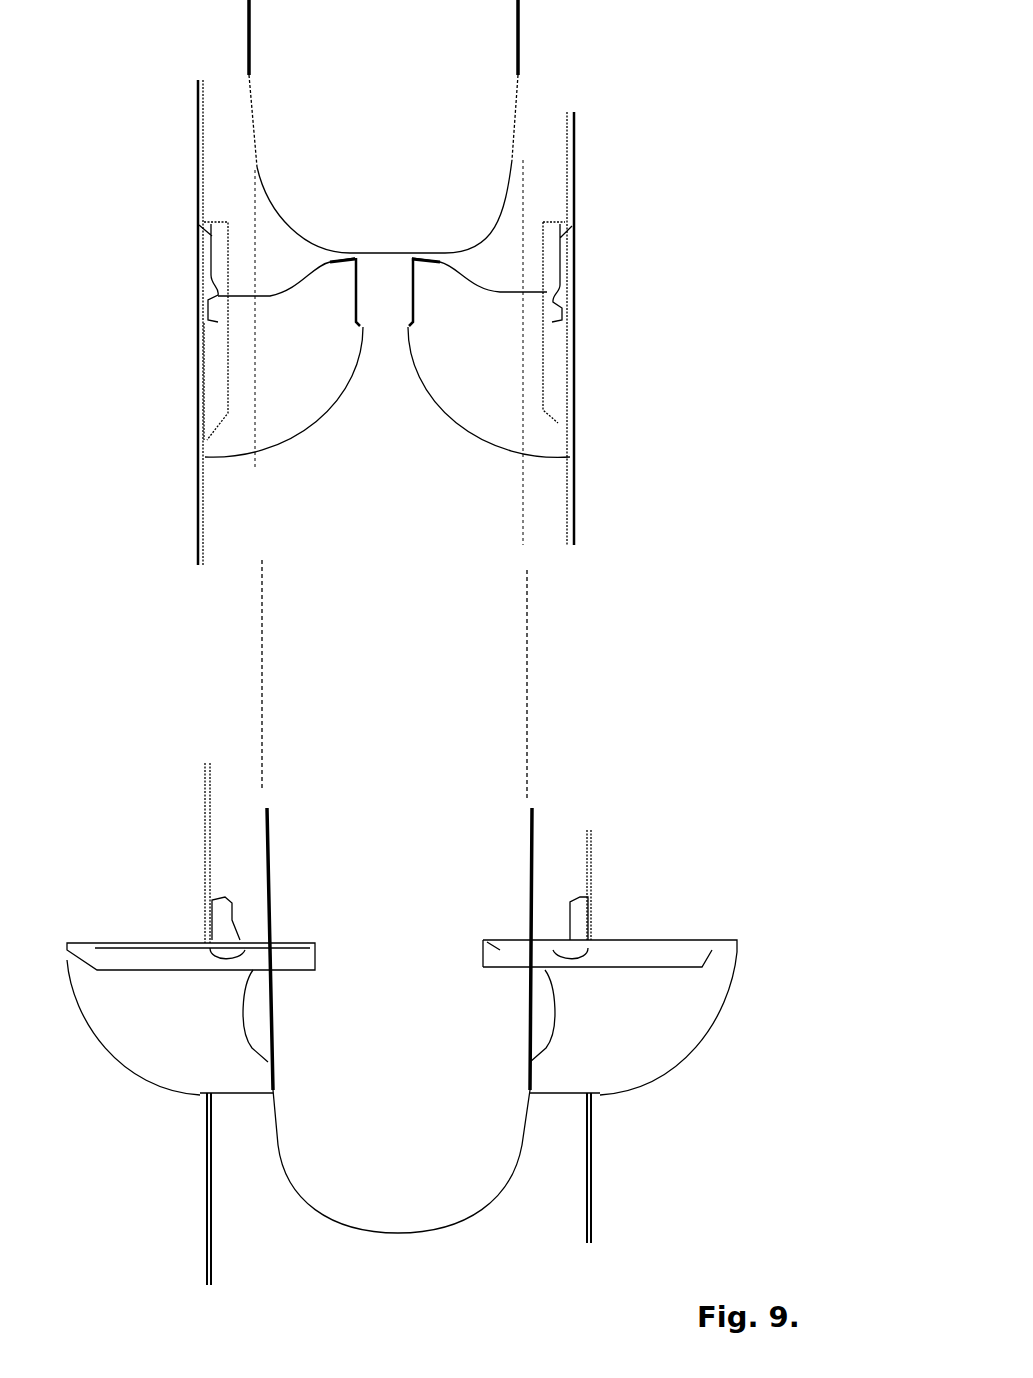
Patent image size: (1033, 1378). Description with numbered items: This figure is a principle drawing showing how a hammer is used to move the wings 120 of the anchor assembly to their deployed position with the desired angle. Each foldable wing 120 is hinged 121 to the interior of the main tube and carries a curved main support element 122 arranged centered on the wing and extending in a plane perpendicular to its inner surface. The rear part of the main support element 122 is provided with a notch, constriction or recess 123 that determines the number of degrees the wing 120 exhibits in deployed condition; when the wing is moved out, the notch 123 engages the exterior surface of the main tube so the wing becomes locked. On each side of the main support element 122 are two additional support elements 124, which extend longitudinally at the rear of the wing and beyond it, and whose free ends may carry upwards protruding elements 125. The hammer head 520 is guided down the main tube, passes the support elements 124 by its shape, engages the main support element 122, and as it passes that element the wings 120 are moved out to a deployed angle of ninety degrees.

The hammer head 520 is at (480, 128).
The foldable wing 120 is at (578, 367).
The hinge 121 is at (565, 305).
The main support element 122 is at (495, 417).
The notch, constriction or recess 123 is at (360, 300).
The additional support element 124 is at (562, 380).
The upwards protruding element 125 is at (313, 940).